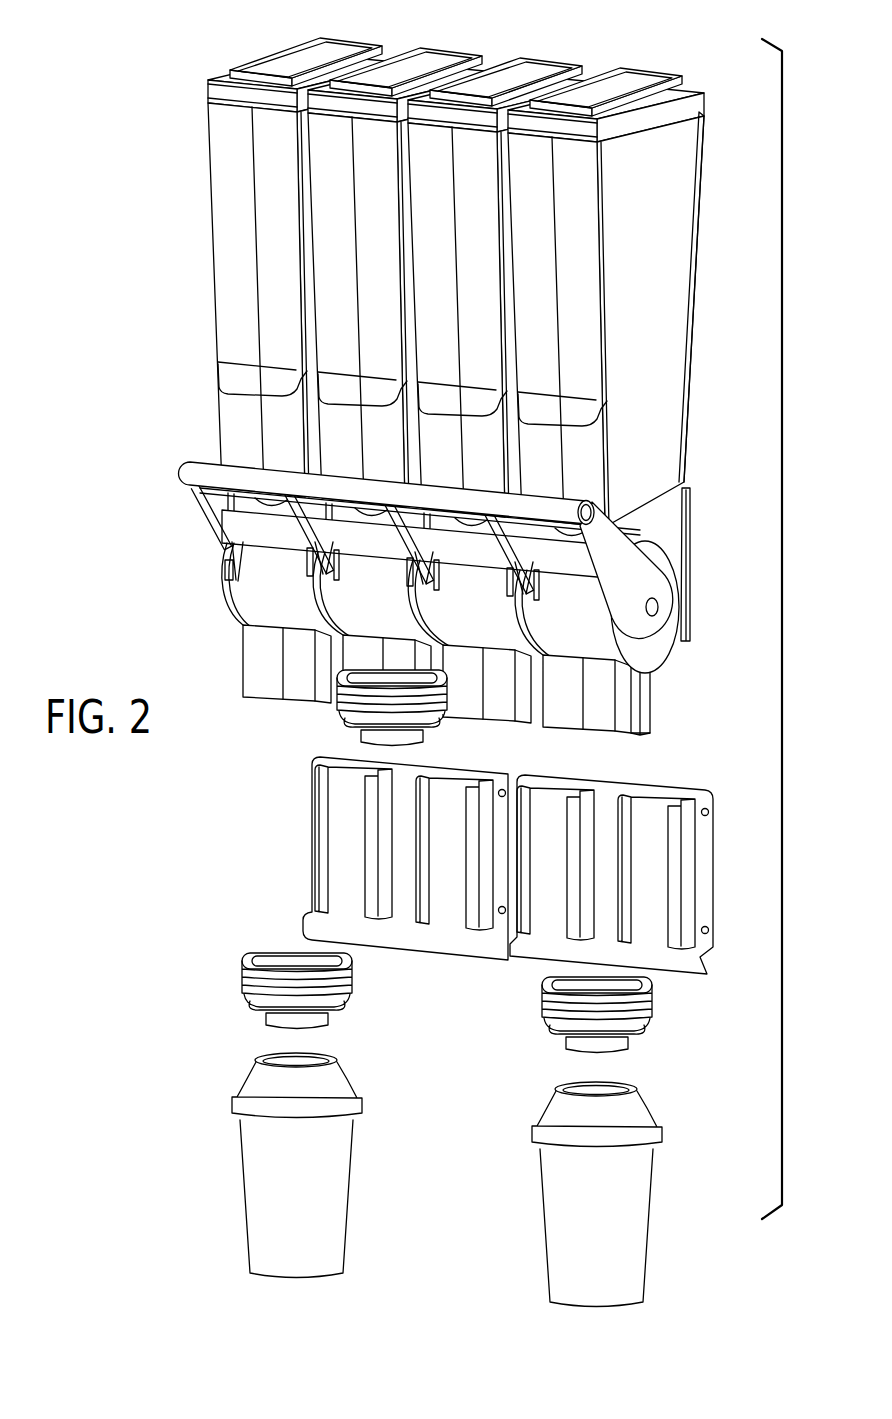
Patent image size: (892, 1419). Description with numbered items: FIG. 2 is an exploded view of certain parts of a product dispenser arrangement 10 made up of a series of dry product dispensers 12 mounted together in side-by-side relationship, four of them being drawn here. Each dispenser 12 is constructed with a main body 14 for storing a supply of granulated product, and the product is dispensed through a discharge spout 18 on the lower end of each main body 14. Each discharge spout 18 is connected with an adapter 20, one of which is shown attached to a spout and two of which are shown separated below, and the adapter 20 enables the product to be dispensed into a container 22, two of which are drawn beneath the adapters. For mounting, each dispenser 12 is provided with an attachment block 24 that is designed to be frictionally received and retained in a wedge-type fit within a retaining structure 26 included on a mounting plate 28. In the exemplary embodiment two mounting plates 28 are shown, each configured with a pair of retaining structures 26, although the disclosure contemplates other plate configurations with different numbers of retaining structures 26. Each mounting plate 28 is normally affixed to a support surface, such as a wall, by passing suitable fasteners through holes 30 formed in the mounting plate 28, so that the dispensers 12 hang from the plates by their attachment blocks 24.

The dispenser system 10 is at (592, 32).
The dry product dispenser 12 is at (717, 230).
The main body 14 is at (695, 362).
The discharge spout 18 is at (637, 705).
The adapter 20 is at (370, 713).
The container 22 is at (263, 1192).
The attachment block 24 is at (690, 558).
The retaining structure 26 is at (322, 832).
The mounting plate 28 is at (320, 923).
The holes 30 is at (497, 918).